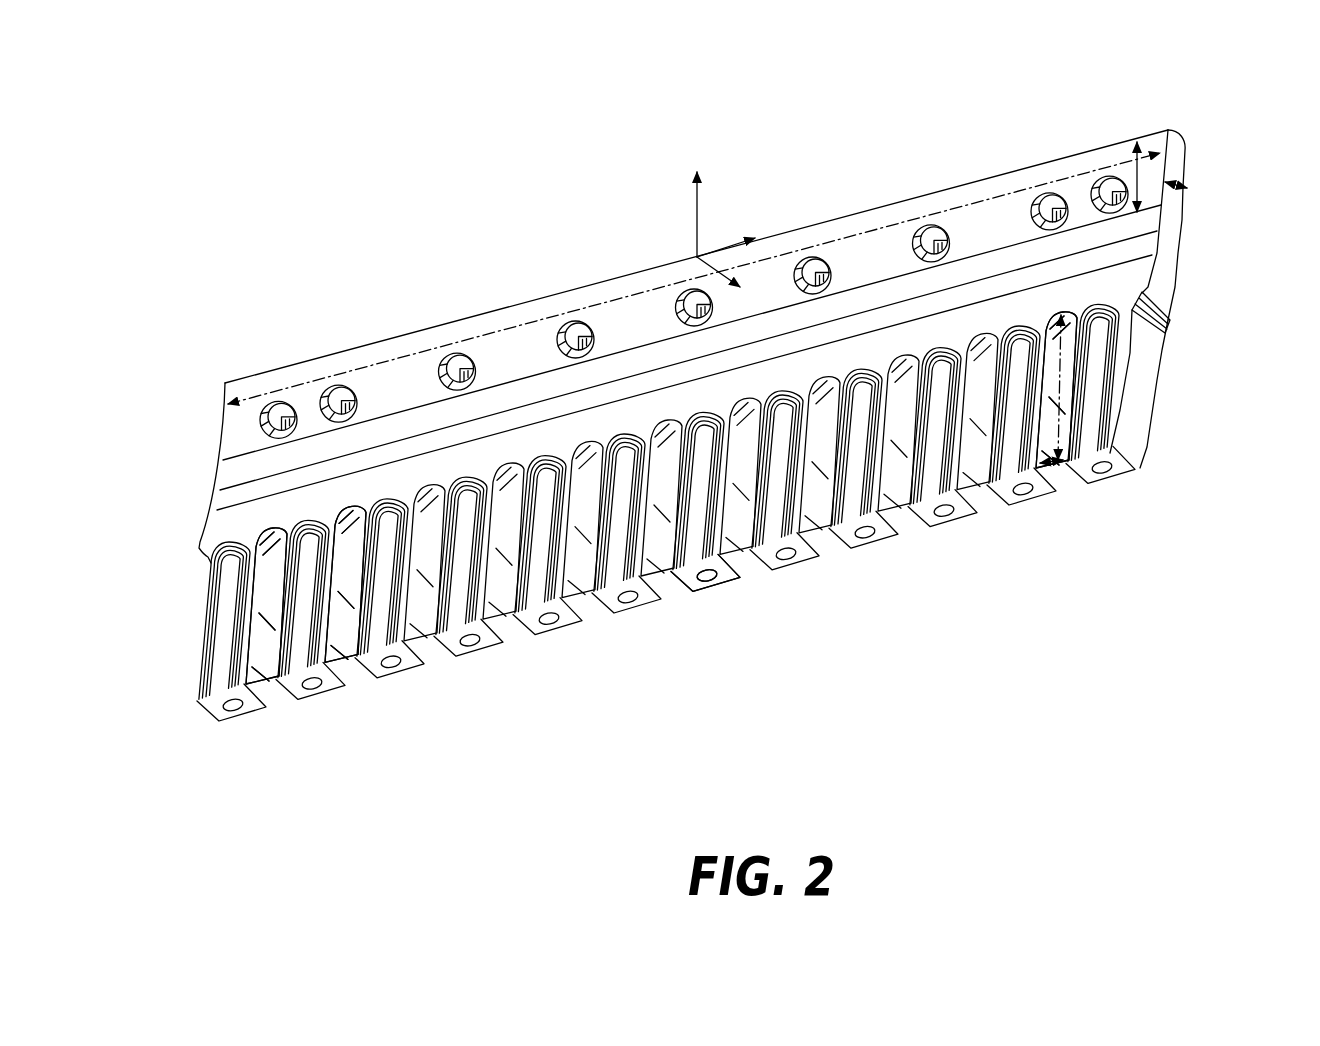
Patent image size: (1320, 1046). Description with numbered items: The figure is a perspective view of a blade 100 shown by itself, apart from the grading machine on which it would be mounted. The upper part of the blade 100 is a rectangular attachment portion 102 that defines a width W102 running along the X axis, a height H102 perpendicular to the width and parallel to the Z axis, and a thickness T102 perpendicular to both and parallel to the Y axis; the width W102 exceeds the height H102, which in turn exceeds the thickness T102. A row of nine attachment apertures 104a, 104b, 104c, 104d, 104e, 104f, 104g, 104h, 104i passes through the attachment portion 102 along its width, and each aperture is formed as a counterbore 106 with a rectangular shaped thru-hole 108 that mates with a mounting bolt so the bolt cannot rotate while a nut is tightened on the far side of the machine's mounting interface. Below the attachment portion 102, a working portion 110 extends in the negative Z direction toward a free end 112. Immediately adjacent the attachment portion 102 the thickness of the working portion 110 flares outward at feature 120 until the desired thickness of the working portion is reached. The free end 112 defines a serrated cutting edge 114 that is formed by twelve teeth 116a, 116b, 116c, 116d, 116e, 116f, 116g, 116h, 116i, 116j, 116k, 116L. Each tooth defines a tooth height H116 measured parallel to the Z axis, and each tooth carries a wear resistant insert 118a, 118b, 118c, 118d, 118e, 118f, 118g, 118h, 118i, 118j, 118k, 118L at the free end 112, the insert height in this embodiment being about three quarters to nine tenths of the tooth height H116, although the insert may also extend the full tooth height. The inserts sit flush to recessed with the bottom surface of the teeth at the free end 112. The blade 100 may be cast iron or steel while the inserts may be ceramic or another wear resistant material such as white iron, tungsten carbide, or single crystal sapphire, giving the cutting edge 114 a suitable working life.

The blade 100 is at (705, 438).
The rectangular attachment portion 102 is at (1066, 133).
The width of attachment portion W102 is at (975, 200).
The height of attachment portion H102 is at (1172, 128).
The thickness of attachment portion T102 is at (1188, 186).
The attachment aperture 104a is at (283, 412).
The attachment aperture 104b is at (337, 390).
The attachment aperture 104c is at (470, 310).
The attachment aperture 104d is at (576, 322).
The attachment aperture 104e is at (690, 290).
The attachment aperture 104f is at (813, 257).
The attachment aperture 104g is at (931, 225).
The attachment aperture 104h is at (1049, 191).
The attachment aperture 104i is at (1112, 178).
The counterbore 106 is at (263, 430).
The rectangular shaped thru-hole 108 is at (258, 430).
The working portion 110 is at (1160, 416).
The free end 112 is at (708, 600).
The serrated cutting edge 114 is at (272, 514).
The tooth 116a is at (206, 705).
The tooth 116b is at (330, 692).
The tooth 116c is at (420, 668).
The tooth 116d is at (500, 665).
The tooth 116e is at (580, 668).
The tooth 116f is at (622, 616).
The tooth 116g is at (712, 608).
The tooth 116h is at (828, 588).
The tooth 116i is at (882, 578).
The tooth 116j is at (975, 565).
The tooth 116k is at (1043, 480).
The tooth 116L is at (1100, 483).
The tooth height H116 is at (1062, 350).
The wear resistant insert 118a is at (226, 720).
The wear resistant insert 118b is at (296, 698).
The wear resistant insert 118c is at (386, 664).
The wear resistant insert 118d is at (463, 643).
The wear resistant insert 118e is at (545, 650).
The wear resistant insert 118f is at (598, 636).
The wear resistant insert 118g is at (733, 585).
The wear resistant insert 118h is at (812, 558).
The wear resistant insert 118i is at (902, 545).
The wear resistant insert 118j is at (965, 520).
The wear resistant insert 118k is at (1020, 497).
The wear resistant insert 118L is at (1103, 478).
The flare feature 120 is at (1177, 260).